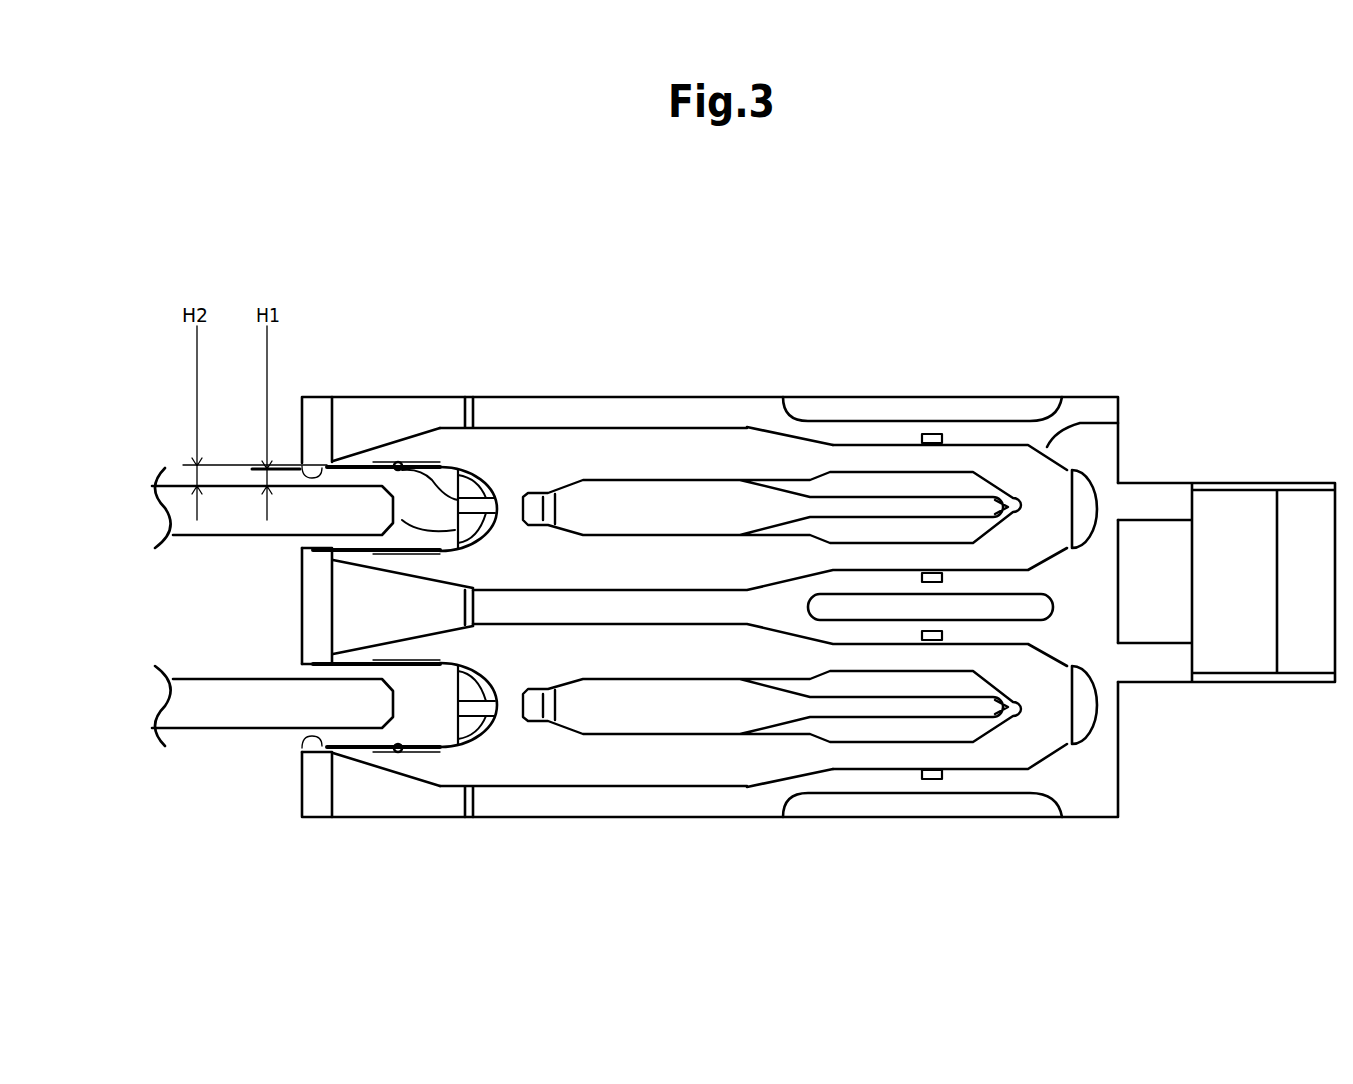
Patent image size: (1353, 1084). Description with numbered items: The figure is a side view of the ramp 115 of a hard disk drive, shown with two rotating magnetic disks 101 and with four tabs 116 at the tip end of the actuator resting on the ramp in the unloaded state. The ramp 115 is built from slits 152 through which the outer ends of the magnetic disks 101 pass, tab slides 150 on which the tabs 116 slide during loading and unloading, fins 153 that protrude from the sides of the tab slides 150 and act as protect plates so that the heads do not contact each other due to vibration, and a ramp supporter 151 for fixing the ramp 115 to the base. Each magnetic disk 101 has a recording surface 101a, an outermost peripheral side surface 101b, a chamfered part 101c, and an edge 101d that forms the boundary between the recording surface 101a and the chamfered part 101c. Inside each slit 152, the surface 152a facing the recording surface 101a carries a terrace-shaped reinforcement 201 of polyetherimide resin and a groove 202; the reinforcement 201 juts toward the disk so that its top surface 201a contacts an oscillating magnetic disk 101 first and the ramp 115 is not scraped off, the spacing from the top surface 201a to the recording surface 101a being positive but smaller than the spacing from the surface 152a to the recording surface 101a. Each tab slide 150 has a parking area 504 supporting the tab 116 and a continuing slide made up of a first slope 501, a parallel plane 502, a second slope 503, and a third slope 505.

The ramp 115 is at (1141, 855).
The tab 116 is at (935, 434).
The tab slide 150 is at (590, 877).
The ramp supporter 151 is at (1173, 483).
The slit 152 is at (276, 670).
The surface 152a is at (302, 550).
The fin 153 is at (663, 763).
The magnetic disk 101 is at (212, 733).
The recording surface 101a is at (181, 466).
The outermost peripheral side surface 101b is at (455, 530).
The chamfered part 101c is at (445, 500).
The edge 101d is at (397, 458).
The reinforcement 201 is at (437, 462).
The top surface 201a is at (480, 445).
The groove 202 is at (388, 462).
The first slope 501 is at (420, 430).
The parallel plane 502 is at (600, 425).
The second slope 503 is at (840, 425).
The parking area 504 is at (1000, 445).
The third slope 505 is at (1118, 423).